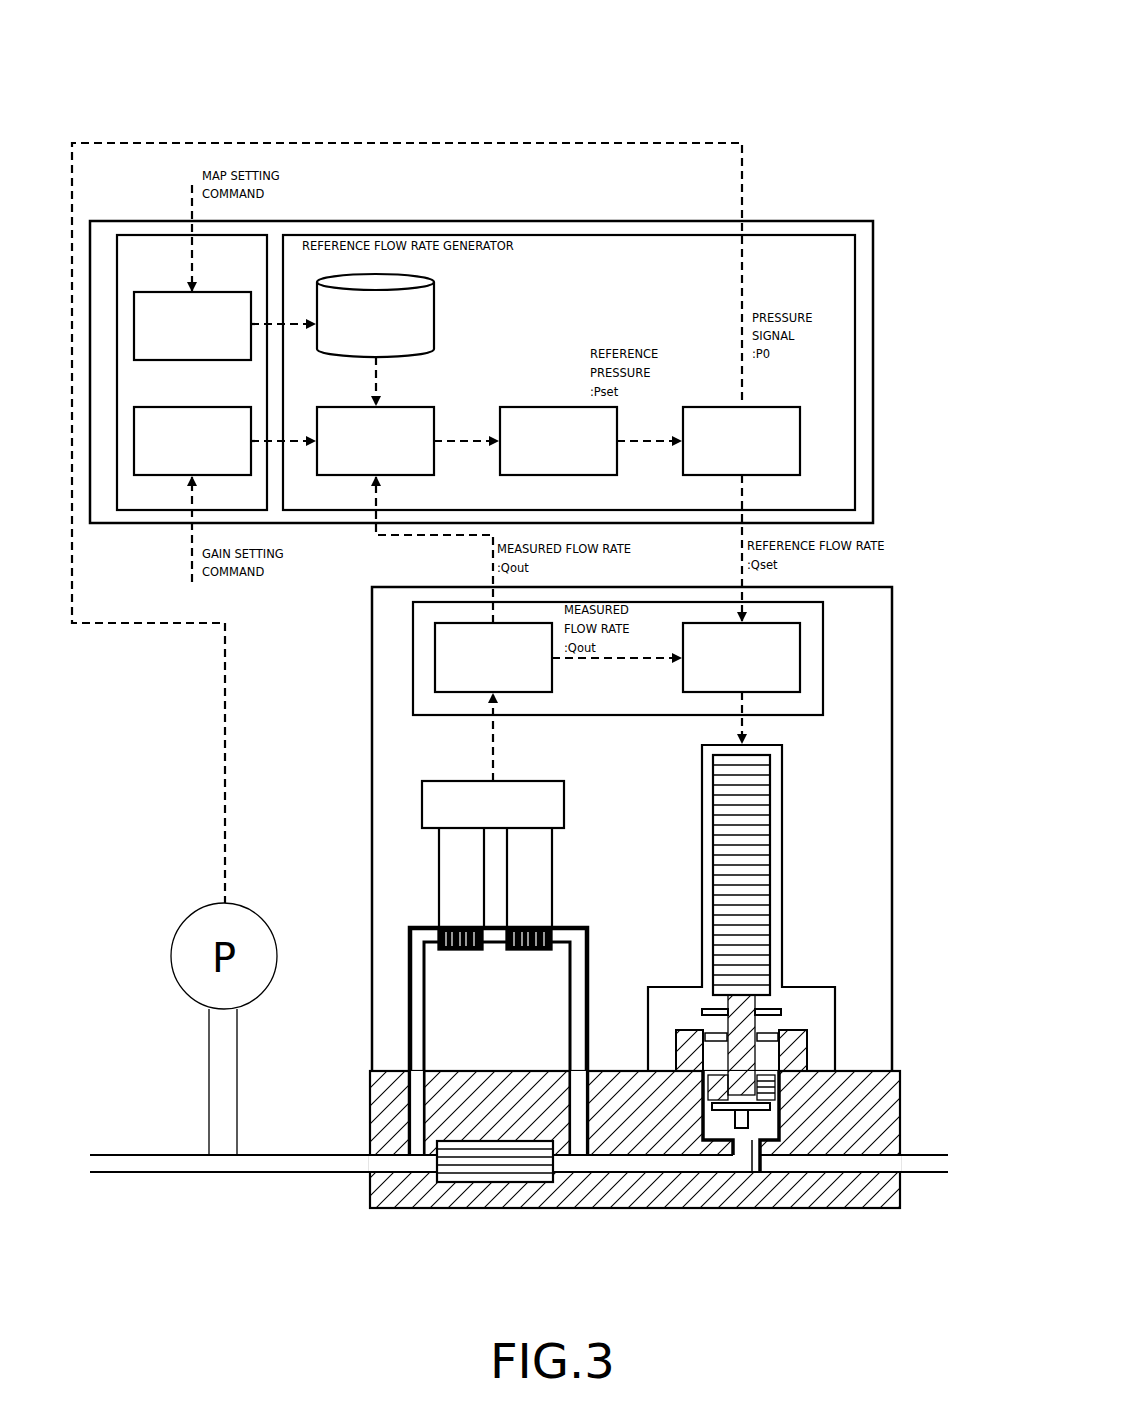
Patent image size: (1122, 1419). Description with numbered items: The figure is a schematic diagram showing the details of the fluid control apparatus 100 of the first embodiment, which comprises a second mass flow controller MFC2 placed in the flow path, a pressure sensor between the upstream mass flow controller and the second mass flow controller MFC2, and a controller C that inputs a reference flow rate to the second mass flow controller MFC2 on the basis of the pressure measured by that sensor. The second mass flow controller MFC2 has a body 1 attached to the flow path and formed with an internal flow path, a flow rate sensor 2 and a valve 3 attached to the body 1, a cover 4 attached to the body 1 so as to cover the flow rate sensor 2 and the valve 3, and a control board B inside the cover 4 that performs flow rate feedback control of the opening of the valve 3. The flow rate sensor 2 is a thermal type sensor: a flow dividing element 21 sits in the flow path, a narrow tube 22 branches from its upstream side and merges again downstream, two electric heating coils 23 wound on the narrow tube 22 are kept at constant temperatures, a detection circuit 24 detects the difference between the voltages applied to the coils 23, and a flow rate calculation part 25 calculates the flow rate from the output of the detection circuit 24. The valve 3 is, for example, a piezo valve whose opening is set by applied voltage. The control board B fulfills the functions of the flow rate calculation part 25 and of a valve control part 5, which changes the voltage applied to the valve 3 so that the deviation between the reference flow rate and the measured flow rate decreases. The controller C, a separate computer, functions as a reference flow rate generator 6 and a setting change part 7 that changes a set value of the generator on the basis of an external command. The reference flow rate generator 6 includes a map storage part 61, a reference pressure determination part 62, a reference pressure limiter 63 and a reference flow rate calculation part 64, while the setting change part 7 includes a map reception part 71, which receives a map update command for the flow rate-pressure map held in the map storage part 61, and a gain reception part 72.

The fluid control apparatus 100 is at (805, 93).
The body 1 is at (636, 1210).
The flow rate sensor 2 is at (475, 927).
The flow dividing element 21 is at (497, 1183).
The narrow tube 22 is at (410, 967).
The electric heating coils 23 is at (495, 963).
The detection circuit 24 is at (565, 803).
The flow rate calculation part 25 is at (435, 652).
The valve 3 is at (795, 818).
The cover 4 is at (892, 735).
The valve control part 5 is at (800, 646).
The reference flow rate generator 6 is at (873, 398).
The map storage part 61 is at (434, 318).
The reference pressure determination part 62 is at (434, 412).
The reference pressure limiter 63 is at (586, 406).
The reference flow rate calculation part 64 is at (724, 406).
The setting change part 7 is at (184, 234).
The map reception part 71 is at (162, 291).
The gain reception part 72 is at (165, 476).
The control board B is at (823, 683).
The controller C is at (816, 220).
The second mass flow controller MFC2 is at (912, 580).